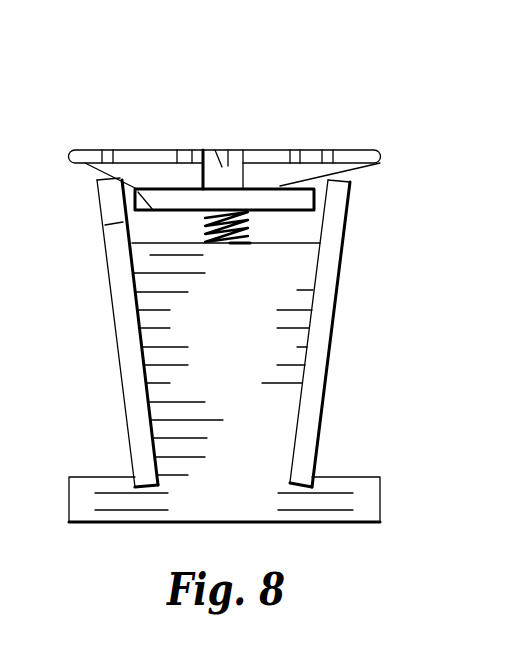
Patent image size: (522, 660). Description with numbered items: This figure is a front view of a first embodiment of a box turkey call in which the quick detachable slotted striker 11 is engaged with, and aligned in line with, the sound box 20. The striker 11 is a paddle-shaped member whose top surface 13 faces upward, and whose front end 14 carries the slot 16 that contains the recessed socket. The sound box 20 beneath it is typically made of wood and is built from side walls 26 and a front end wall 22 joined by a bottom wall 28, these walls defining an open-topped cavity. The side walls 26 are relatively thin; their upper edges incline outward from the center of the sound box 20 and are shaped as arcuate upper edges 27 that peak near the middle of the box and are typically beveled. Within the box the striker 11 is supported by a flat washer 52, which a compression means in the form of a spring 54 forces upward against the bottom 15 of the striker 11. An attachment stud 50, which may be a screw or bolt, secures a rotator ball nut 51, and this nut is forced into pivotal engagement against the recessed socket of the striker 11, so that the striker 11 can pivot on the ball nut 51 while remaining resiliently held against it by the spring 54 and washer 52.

The slotted striker 11 is at (365, 106).
The top surface 13 is at (288, 150).
The front end 14 is at (88, 150).
The bottom 15 is at (153, 210).
The slot 16 is at (207, 150).
The sound box 20 is at (360, 392).
The front end wall 22 is at (145, 410).
The side walls 26 is at (113, 337).
The arcuate upper edges 27 is at (100, 173).
The bottom wall 28 is at (382, 495).
The attachment stud 50 is at (228, 166).
The rotator ball nut 51 is at (215, 150).
The flat washer 52 is at (303, 203).
The spring 54 is at (247, 218).